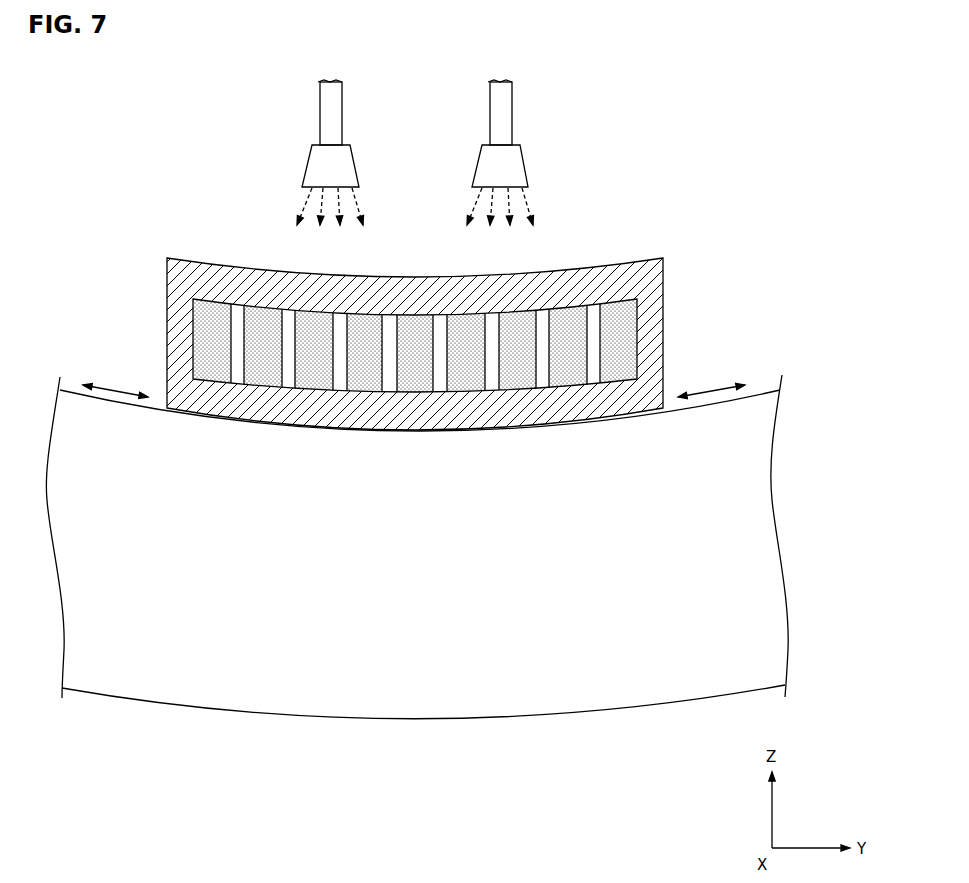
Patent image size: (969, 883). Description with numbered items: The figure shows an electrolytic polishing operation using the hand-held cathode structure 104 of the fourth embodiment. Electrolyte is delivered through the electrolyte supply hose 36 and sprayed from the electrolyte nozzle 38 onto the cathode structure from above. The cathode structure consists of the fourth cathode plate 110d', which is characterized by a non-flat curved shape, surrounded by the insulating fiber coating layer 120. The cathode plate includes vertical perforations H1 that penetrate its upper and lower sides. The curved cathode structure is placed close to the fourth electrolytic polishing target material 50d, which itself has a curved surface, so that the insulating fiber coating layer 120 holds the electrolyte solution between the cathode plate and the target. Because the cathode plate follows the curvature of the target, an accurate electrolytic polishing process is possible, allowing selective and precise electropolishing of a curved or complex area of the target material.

The electrolyte supply hose 36 is at (500, 111).
The electrolyte nozzle 38 is at (488, 166).
The hand-held cathode structure 104 is at (673, 192).
The insulating fiber coating layer 120 is at (566, 285).
The vertical perforations H1 is at (593, 312).
The fourth cathode plate 110d' is at (434, 295).
The fourth electrolytic polishing target material 50d is at (745, 537).